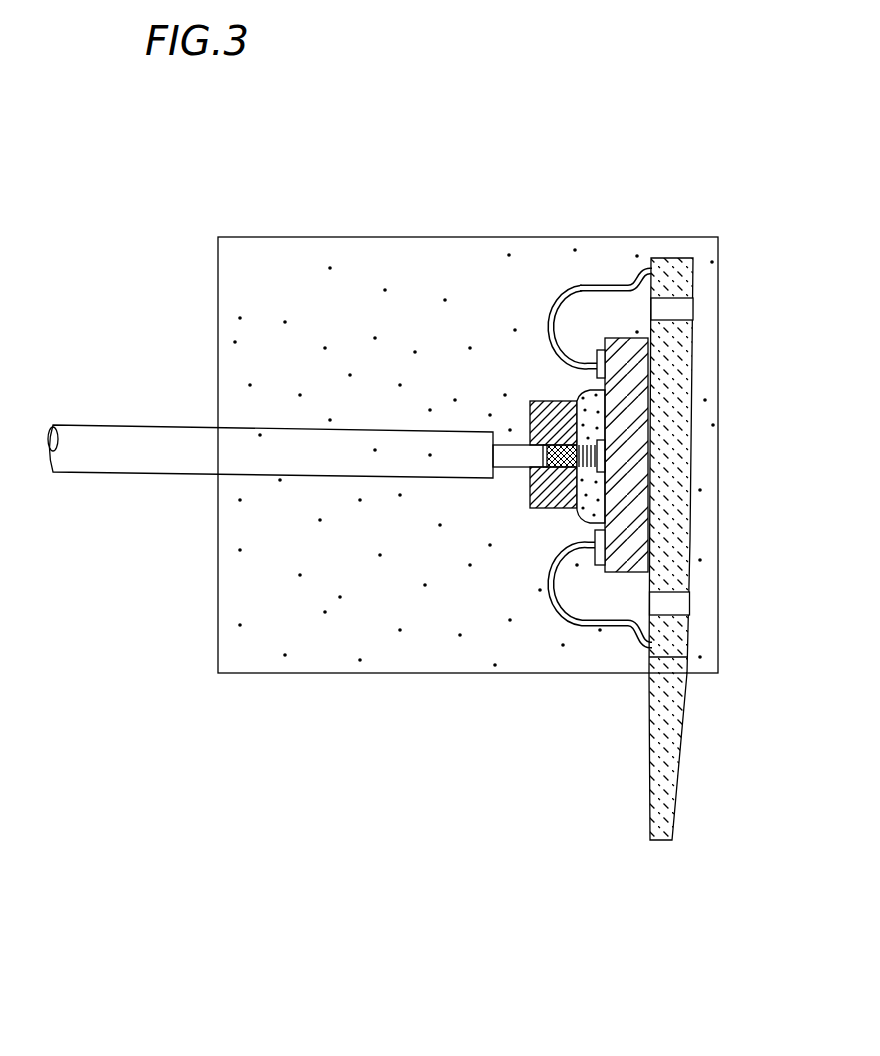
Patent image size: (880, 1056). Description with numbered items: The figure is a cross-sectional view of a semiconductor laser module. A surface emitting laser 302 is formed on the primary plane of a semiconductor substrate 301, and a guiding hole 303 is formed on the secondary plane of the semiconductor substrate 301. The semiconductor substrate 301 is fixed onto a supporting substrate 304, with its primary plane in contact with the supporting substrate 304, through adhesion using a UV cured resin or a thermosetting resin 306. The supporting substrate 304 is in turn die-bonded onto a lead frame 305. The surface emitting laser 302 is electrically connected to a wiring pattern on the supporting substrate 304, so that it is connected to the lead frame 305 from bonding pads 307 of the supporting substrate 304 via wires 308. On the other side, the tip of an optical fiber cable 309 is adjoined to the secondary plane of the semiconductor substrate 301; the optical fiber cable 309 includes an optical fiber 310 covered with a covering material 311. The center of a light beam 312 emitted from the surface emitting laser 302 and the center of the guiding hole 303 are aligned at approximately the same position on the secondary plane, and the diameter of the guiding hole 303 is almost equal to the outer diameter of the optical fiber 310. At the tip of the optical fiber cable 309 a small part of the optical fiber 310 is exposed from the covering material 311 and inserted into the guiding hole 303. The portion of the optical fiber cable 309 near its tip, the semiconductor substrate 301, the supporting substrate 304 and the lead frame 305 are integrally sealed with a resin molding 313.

The semiconductor substrate 301 is at (533, 401).
The surface emitting laser 302 is at (558, 401).
The guiding hole 303 is at (524, 478).
The supporting substrate 304 is at (629, 548).
The lead frame 305 is at (673, 573).
The UV cured resin or thermosetting resin 306 is at (587, 520).
The bonding pads 307 is at (598, 347).
The wires 308 is at (617, 287).
The optical fiber cable 309 is at (222, 683).
The optical fiber 310 is at (508, 460).
The covering material 311 is at (352, 462).
The light beam 312 is at (548, 507).
The resin molding 313 is at (242, 315).